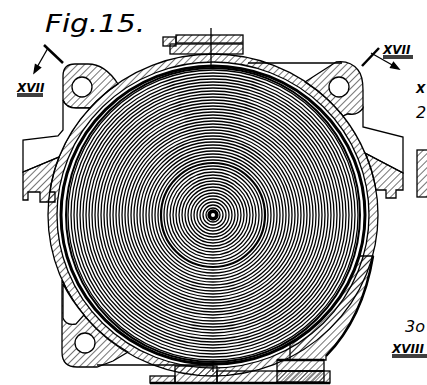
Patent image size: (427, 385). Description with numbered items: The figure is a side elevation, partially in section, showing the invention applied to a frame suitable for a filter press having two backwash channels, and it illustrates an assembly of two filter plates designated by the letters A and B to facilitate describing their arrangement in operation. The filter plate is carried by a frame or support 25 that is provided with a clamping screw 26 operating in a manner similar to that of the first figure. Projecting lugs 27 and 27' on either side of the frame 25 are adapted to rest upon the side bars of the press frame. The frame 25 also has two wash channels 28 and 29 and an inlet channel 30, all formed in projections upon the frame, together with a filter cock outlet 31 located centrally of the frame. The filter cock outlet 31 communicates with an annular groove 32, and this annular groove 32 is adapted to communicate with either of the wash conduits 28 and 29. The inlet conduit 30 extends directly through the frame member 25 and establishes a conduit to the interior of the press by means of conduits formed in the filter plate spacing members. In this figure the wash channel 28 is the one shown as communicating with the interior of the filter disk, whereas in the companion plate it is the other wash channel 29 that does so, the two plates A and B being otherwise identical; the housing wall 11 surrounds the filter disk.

The housing wall 11 is at (340, 127).
The frame 25 is at (262, 62).
The clamping screw 26 is at (165, 380).
The projecting lug 27 is at (40, 198).
The right mounting foot 27' is at (396, 192).
The wash channel 28 is at (72, 92).
The wash channel 29 is at (342, 77).
The inlet channel 30 is at (75, 343).
The filter cock outlet 31 is at (326, 370).
The annular groove 32 is at (426, 242).
The filter unit A is at (331, 272).
The filter unit B is at (426, 280).